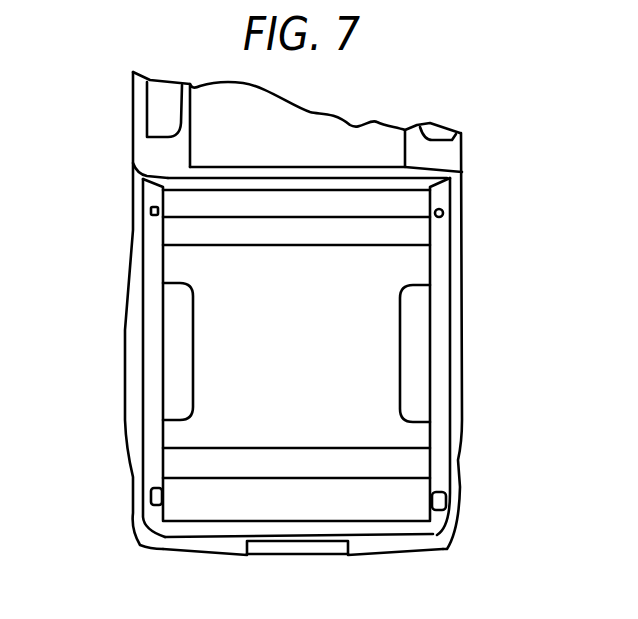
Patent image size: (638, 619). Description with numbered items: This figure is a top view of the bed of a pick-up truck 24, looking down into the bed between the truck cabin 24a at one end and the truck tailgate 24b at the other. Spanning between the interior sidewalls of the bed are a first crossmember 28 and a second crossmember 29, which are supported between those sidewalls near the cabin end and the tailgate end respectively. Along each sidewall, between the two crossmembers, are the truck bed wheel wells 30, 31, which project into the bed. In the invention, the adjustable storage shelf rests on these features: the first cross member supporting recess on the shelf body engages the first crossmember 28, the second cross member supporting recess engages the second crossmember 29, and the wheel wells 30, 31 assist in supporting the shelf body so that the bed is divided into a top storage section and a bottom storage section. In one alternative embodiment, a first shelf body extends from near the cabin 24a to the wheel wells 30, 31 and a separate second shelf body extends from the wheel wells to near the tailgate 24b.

The pick-up truck 24 is at (470, 103).
The truck cabin 24a is at (150, 148).
The truck tailgate 24b is at (210, 527).
The first crossmember 28 is at (408, 203).
The second crossmember 29 is at (400, 500).
The truck bed wheel well 30 is at (173, 347).
The truck bed wheel well 31 is at (418, 360).